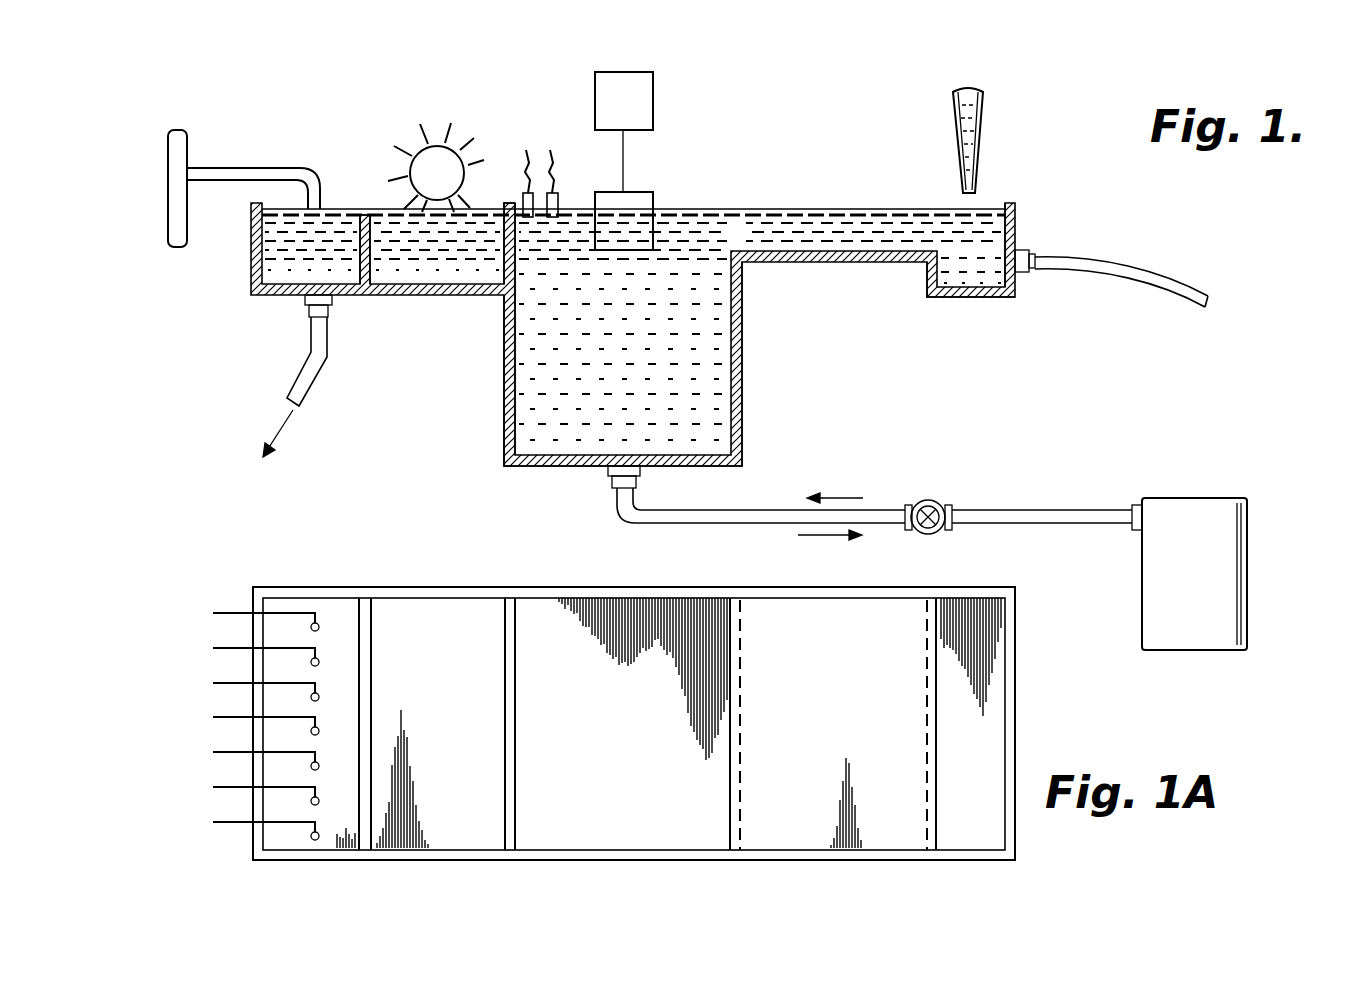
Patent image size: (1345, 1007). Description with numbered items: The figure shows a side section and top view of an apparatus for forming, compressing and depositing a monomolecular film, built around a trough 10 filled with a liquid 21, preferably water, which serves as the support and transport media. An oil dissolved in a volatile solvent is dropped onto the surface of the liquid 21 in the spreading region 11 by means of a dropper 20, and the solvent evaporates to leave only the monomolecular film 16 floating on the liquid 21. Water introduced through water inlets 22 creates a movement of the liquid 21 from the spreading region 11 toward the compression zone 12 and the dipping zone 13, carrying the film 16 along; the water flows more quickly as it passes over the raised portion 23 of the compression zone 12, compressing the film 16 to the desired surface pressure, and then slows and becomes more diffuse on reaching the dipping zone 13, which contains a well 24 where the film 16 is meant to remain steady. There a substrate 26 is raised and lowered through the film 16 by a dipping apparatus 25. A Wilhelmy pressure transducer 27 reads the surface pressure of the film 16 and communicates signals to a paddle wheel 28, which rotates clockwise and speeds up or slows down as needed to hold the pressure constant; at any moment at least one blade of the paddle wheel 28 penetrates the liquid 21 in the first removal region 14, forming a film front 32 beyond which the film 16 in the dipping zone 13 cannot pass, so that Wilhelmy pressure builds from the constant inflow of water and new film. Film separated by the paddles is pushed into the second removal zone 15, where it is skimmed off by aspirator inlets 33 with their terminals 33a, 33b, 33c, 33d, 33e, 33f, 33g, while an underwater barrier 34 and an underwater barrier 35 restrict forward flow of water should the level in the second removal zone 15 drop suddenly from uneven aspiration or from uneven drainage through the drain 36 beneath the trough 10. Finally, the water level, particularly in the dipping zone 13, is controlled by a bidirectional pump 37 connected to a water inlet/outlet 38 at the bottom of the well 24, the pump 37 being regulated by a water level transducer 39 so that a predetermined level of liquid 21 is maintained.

In FIG. 1, the trough 10 is at (690, 320).
In FIG. 1A, the trough 10 is at (582, 647).
In FIG. 1, the spreading region 11 is at (1017, 227).
In FIG. 1A, the spreading region 11 is at (977, 730).
In FIG. 1, the compression zone 12 is at (850, 227).
In FIG. 1A, the compression zone 12 is at (874, 724).
In FIG. 1, the dipping zone 13 is at (682, 233).
In FIG. 1A, the dipping zone 13 is at (649, 724).
In FIG. 1, the first removal region 14 is at (428, 262).
In FIG. 1A, the first removal region 14 is at (399, 775).
In FIG. 1, the second removal zone 15 is at (287, 245).
In FIG. 1A, the second removal zone 15 is at (343, 637).
In FIG. 1, the monomolecular film 16 is at (771, 200).
In FIG. 1, the dropper 20 is at (985, 110).
In FIG. 1, the liquid 21 is at (913, 212).
In FIG. 1, the water inlets 22 is at (1153, 283).
In FIG. 1, the raised portion 23 is at (902, 263).
In FIG. 1, the well 24 is at (742, 430).
In FIG. 1, the dipping apparatus 25 is at (643, 92).
In FIG. 1, the substrate 26 is at (640, 200).
In FIG. 1, the Wilhelmy pressure transducer 27 is at (558, 193).
In FIG. 1, the paddle wheel 28 is at (430, 170).
In FIG. 1, the film front 32 is at (460, 218).
In FIG. 1, the aspirator inlets 33 is at (227, 170).
In FIG. 1A, the terminal 33a is at (227, 613).
In FIG. 1A, the terminal 33b is at (223, 648).
In FIG. 1A, the terminal 33c is at (223, 683).
In FIG. 1A, the terminal 33d is at (225, 717).
In FIG. 1A, the terminal 33e is at (225, 752).
In FIG. 1A, the terminal 33f is at (225, 787).
In FIG. 1A, the terminal 33g is at (227, 822).
In FIG. 1, the underwater barrier 34 is at (363, 270).
In FIG. 1, the underwater barrier 35 is at (500, 267).
In FIG. 1A, the underwater barrier 35 is at (510, 724).
In FIG. 1, the drain 36 is at (293, 390).
In FIG. 1, the bidirectional pump 37 is at (1207, 517).
In FIG. 1, the water inlet/outlet 38 is at (647, 523).
In FIG. 1, the water level transducer 39 is at (530, 217).